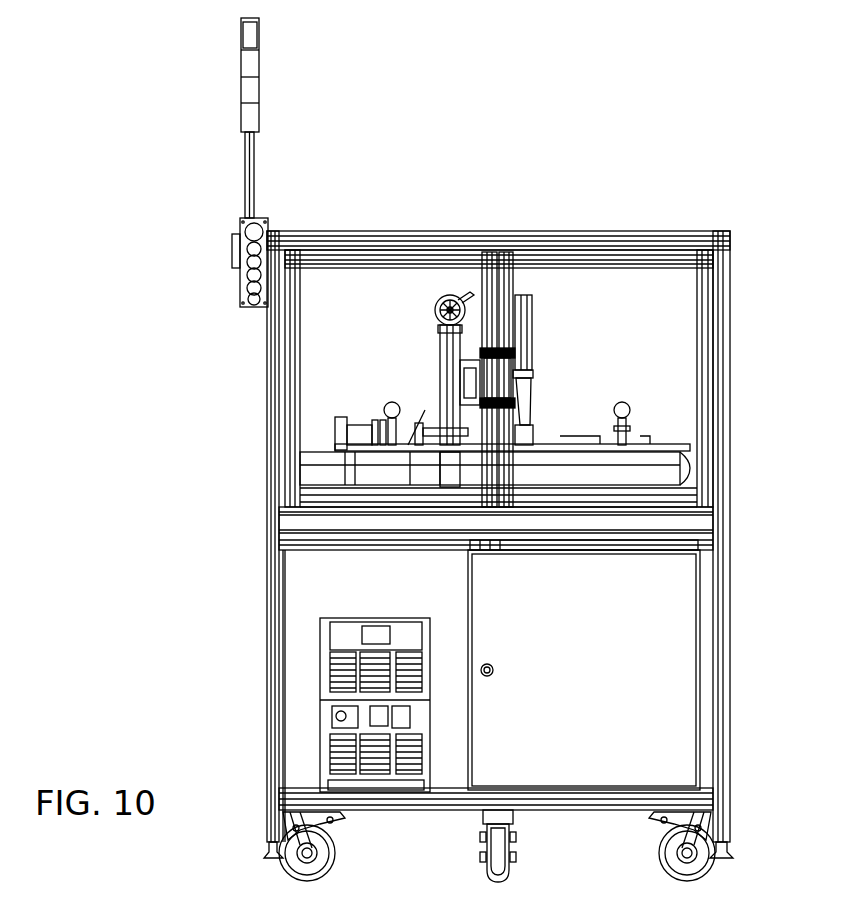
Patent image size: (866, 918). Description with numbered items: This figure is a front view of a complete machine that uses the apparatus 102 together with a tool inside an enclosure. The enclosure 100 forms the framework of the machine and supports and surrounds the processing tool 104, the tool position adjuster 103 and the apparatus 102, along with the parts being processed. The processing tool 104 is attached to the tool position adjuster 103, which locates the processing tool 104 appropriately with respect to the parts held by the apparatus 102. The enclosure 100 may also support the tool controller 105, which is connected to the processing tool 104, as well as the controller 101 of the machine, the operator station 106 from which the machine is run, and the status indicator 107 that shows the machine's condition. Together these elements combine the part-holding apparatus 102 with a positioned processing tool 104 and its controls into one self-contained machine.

The enclosure 100 is at (731, 268).
The controller 101 is at (714, 637).
The apparatus 102 is at (335, 415).
The tool position adjuster 103 is at (437, 343).
The processing tool 104 is at (533, 343).
The tool controller 105 is at (320, 638).
The operator station 106 is at (238, 283).
The status indicator 107 is at (241, 96).